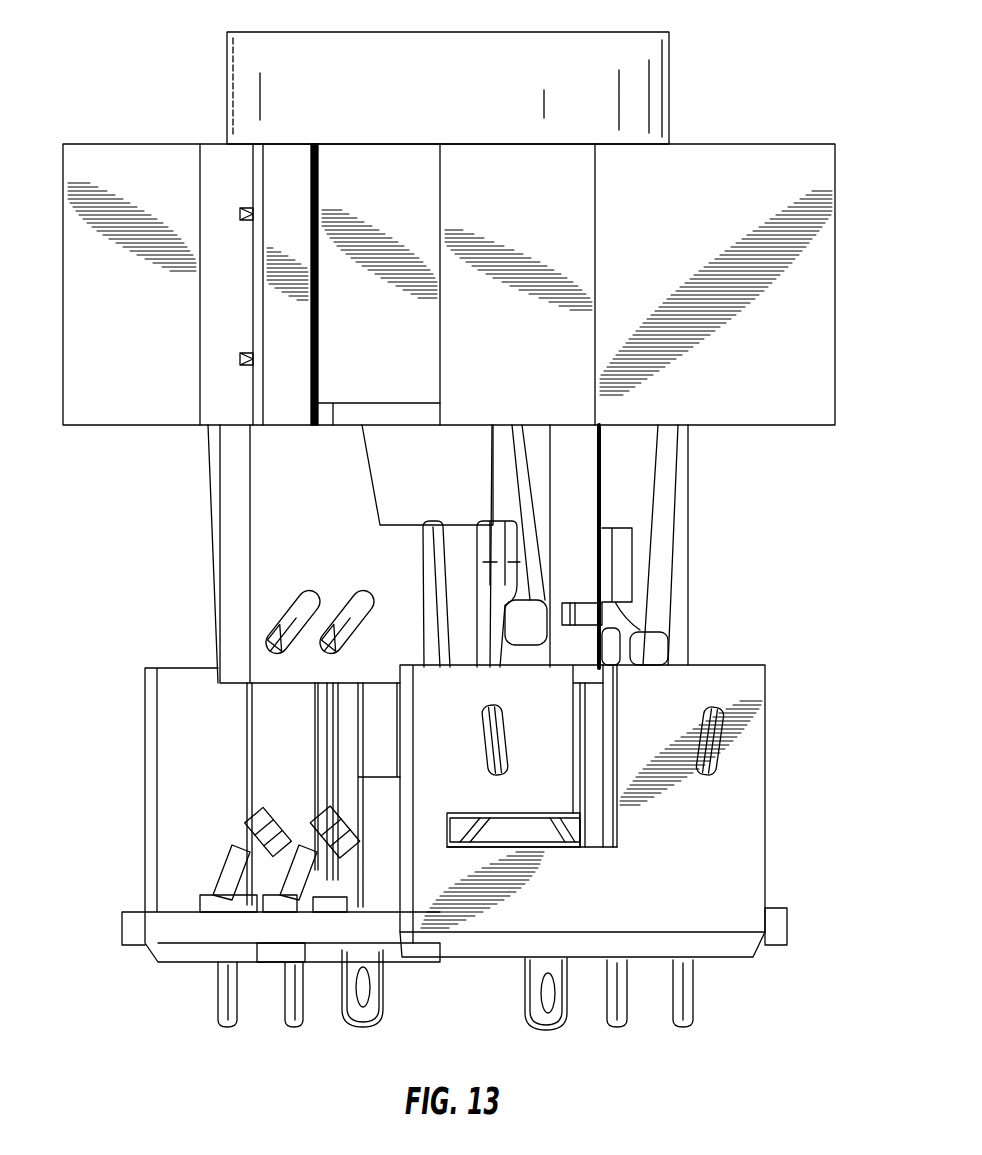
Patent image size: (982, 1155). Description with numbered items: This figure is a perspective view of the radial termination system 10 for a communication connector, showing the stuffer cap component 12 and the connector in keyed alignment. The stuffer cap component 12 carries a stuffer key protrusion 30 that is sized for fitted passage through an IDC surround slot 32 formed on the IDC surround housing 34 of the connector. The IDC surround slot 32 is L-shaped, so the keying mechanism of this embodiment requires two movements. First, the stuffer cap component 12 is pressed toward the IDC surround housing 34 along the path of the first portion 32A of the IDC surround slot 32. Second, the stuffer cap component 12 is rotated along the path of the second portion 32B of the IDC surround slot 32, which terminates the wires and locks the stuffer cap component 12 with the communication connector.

The radial termination system 10 is at (64, 89).
The stuffer cap component 12 is at (749, 133).
The stuffer key protrusion 30 is at (582, 603).
The IDC surround slot 32 is at (613, 710).
The first portion 32A is at (607, 765).
The second portion 32B is at (547, 837).
The IDC surround housing 34 is at (767, 863).